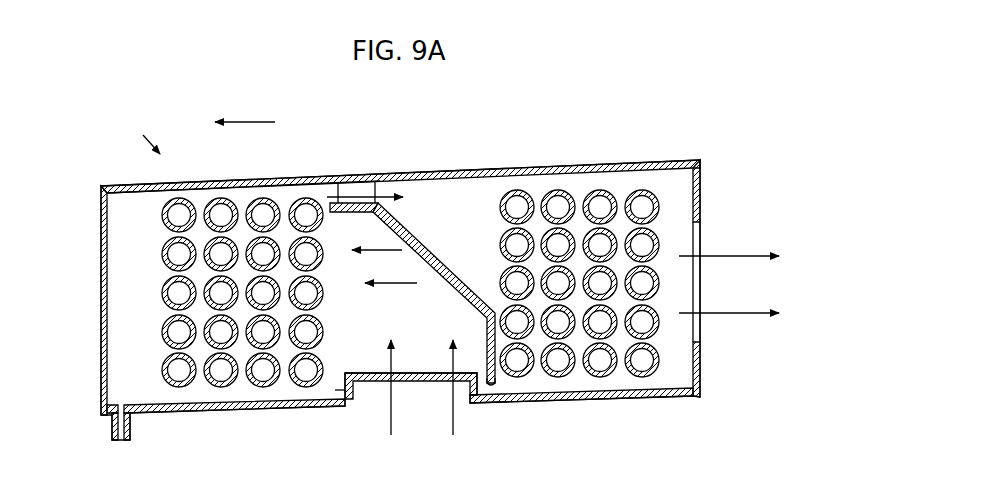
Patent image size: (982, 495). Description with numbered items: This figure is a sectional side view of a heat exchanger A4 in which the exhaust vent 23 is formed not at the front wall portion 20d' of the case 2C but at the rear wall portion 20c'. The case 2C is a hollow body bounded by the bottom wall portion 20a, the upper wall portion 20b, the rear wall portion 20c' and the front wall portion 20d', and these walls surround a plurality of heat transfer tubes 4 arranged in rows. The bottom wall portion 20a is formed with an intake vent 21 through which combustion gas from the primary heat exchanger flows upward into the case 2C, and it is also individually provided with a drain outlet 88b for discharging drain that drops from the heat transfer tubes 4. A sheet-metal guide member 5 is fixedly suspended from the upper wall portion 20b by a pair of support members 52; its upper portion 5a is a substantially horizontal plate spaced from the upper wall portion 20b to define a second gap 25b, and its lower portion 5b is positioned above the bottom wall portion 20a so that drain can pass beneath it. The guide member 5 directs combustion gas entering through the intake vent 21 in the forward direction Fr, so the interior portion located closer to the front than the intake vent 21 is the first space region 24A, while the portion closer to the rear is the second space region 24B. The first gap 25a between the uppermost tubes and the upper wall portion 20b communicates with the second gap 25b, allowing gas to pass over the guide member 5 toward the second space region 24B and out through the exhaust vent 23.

The case 2C is at (125, 184).
The heat exchanger A4 is at (142, 132).
The forward direction Fr is at (245, 109).
The heat transfer tubes 4 is at (198, 201).
The guide member 5 is at (427, 239).
The upper portion 5a is at (358, 212).
The lower portion 5b is at (500, 384).
The bottom wall portion 20a is at (595, 399).
The upper wall portion 20b is at (509, 179).
The rear wall portion 20c' is at (732, 278).
The front wall portion 20d' is at (76, 300).
The intake vent 21 is at (364, 399).
The exhaust vent 23 is at (700, 283).
The first space region 24A is at (122, 350).
The second space region 24B is at (673, 369).
The first gap 25a is at (190, 196).
The second gap 25b is at (352, 189).
The support members 52 is at (365, 188).
The drain outlet 88b is at (121, 441).